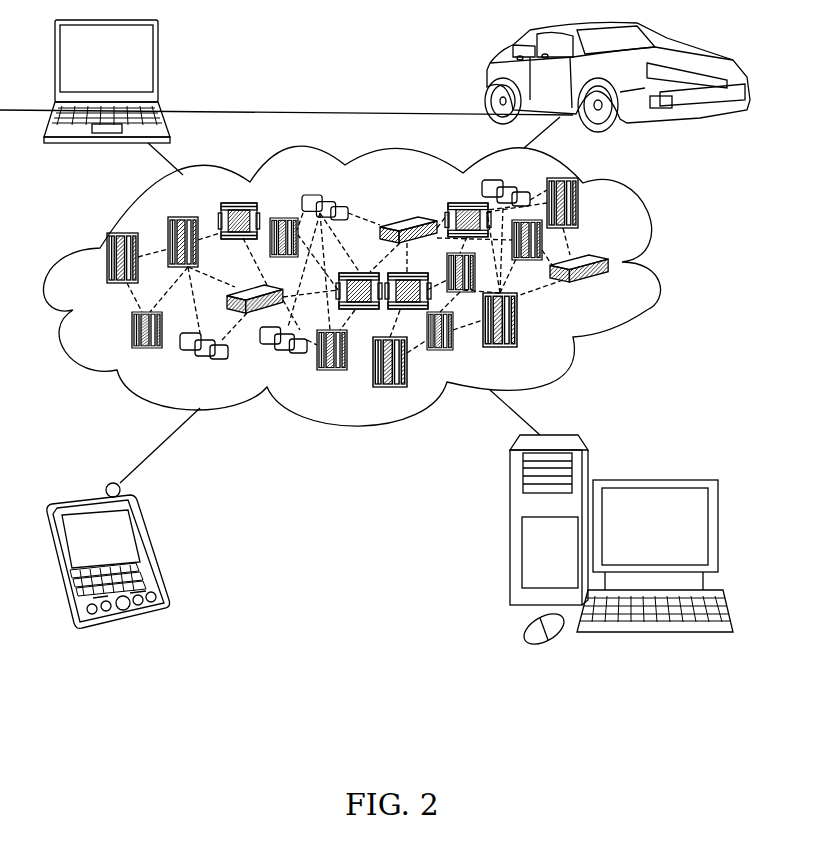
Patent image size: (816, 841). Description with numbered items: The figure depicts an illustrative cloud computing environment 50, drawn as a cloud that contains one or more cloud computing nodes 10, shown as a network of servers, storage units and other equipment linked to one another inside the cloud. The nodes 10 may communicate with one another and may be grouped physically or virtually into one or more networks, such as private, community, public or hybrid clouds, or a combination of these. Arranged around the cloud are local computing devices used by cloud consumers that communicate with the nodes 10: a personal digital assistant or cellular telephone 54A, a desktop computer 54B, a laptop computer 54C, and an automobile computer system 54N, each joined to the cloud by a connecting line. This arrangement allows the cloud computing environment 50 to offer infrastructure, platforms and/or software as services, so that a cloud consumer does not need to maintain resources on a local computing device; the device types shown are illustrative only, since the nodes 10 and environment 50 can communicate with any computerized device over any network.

The cloud computing environment 50 is at (655, 263).
The cloud computing nodes 10 is at (394, 282).
The personal digital assistant (PDA) or cellular telephone 54A is at (152, 545).
The desktop computer 54B is at (652, 480).
The laptop computer 54C is at (165, 65).
The automobile computer system 54N is at (490, 75).